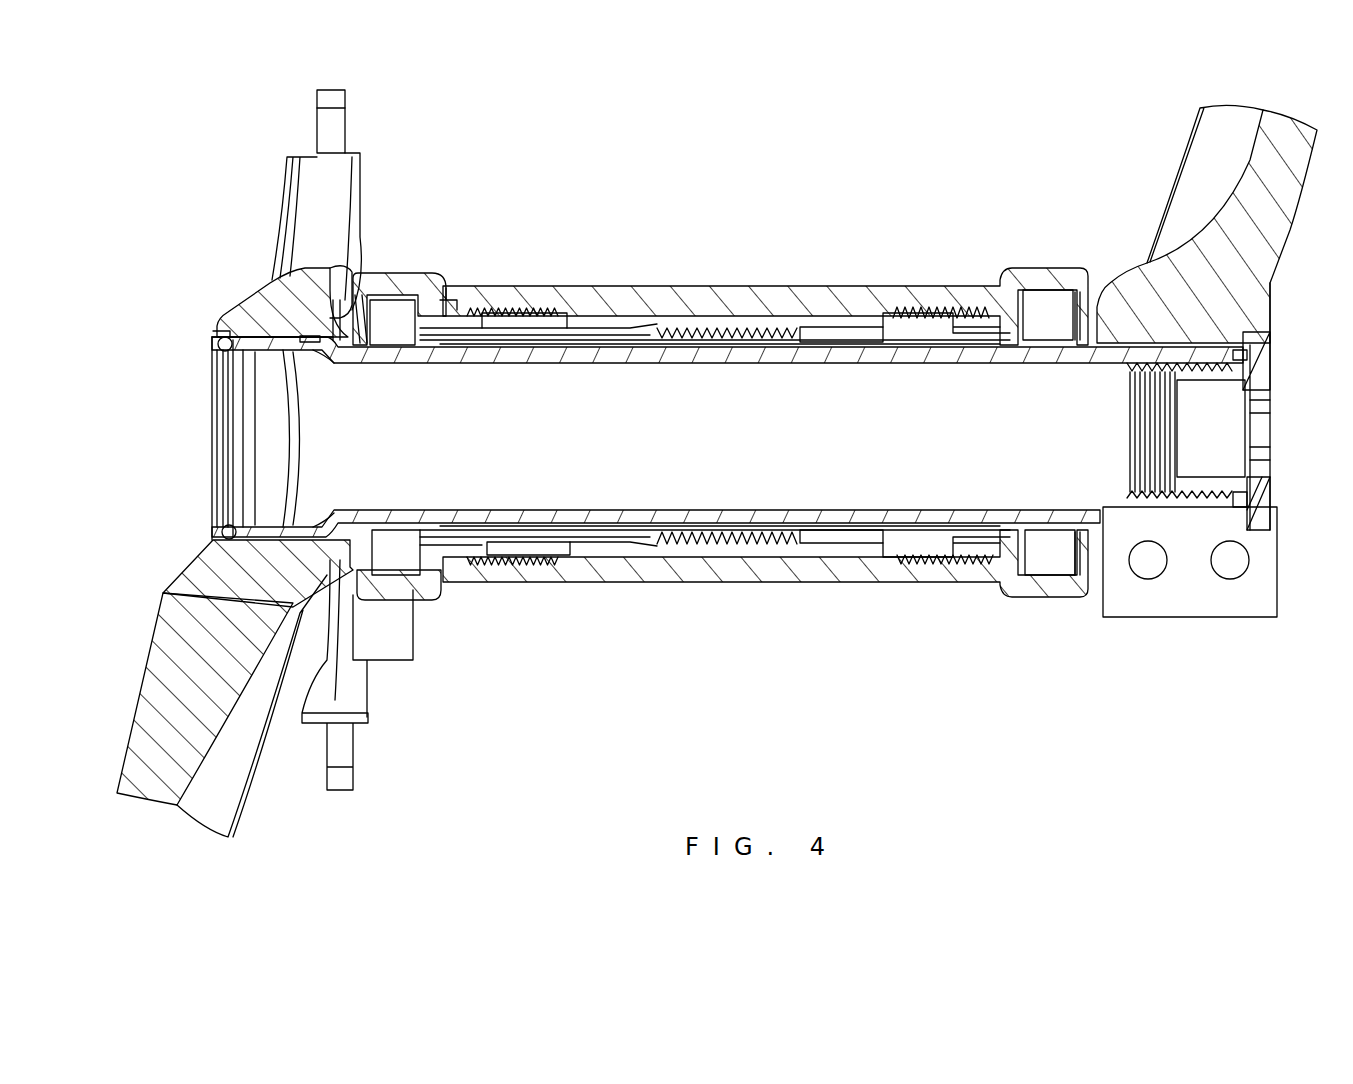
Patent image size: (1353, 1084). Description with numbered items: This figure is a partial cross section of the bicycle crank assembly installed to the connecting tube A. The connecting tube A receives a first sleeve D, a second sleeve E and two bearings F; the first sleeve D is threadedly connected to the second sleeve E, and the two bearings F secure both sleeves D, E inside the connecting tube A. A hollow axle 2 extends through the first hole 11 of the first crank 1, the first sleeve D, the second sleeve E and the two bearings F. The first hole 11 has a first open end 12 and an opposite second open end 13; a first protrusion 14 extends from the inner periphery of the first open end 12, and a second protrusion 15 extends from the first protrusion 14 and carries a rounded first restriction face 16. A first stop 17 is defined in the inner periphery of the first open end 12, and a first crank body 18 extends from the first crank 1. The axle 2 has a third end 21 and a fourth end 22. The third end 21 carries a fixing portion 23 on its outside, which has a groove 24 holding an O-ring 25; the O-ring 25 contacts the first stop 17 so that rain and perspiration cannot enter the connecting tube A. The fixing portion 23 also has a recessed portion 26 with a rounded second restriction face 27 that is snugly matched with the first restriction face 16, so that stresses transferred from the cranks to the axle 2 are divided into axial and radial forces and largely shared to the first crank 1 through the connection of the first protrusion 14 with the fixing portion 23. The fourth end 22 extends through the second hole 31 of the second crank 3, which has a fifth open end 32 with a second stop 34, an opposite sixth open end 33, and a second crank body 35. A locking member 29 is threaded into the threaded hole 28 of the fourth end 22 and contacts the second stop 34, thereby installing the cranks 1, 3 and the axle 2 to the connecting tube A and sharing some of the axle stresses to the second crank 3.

The first crank 1 is at (293, 275).
The axle 2 is at (793, 353).
The second crank 3 is at (1210, 323).
The first hole 11 is at (273, 530).
The first open end 12 is at (215, 340).
The second open end 13 is at (392, 300).
The first protrusion 14 is at (273, 338).
The second protrusion 15 is at (333, 338).
The first restriction face 16 is at (433, 300).
The first stop 17 is at (260, 338).
The first crank body 18 is at (153, 723).
The third end 21 is at (212, 428).
The fourth end 22 is at (1250, 493).
The fixing portion 23 is at (268, 530).
The groove 24 is at (223, 377).
The O-ring 25 is at (218, 336).
The recessed portion 26 is at (322, 340).
The second restriction face 27 is at (433, 300).
The threaded hole 28 is at (1193, 500).
The locking member 29 is at (1263, 507).
The second hole 31 is at (1143, 317).
The fifth open end 32 is at (1272, 337).
The sixth open end 33 is at (1080, 317).
The second stop 34 is at (1250, 345).
The second crank body 35 is at (1297, 180).
The connecting tube A is at (740, 310).
The first sleeve D is at (840, 333).
The second sleeve E is at (654, 332).
The bearings F is at (402, 297).